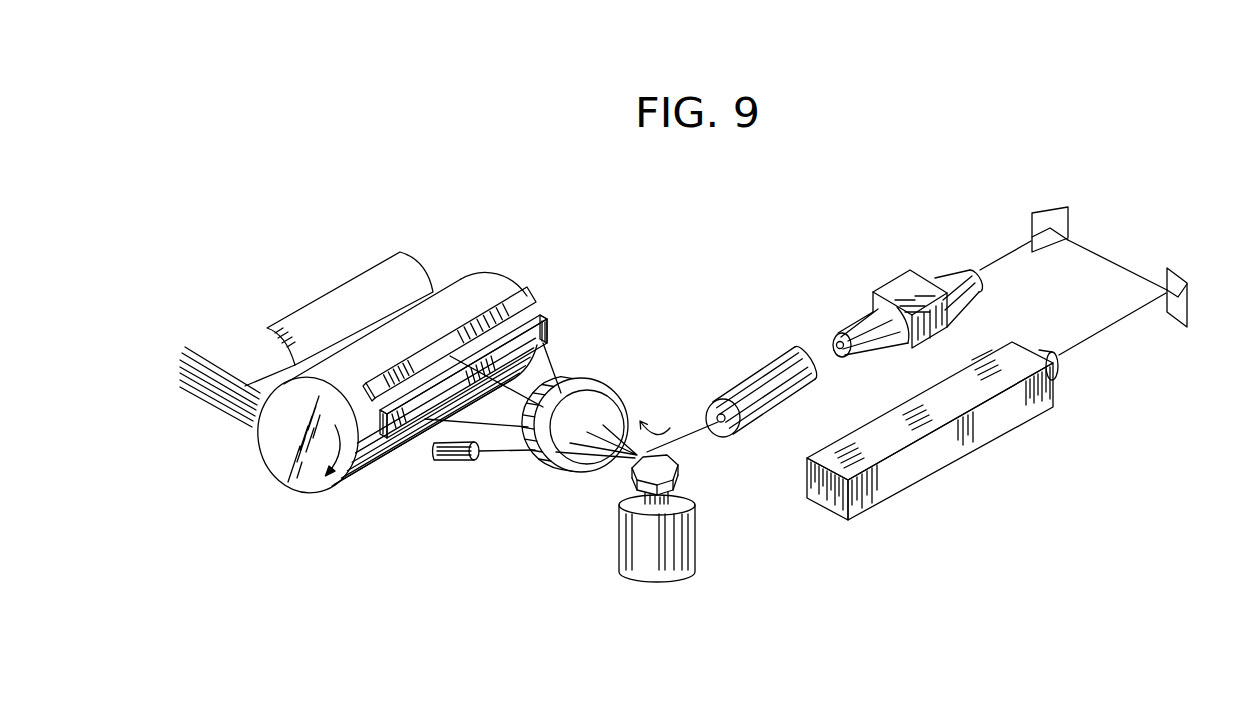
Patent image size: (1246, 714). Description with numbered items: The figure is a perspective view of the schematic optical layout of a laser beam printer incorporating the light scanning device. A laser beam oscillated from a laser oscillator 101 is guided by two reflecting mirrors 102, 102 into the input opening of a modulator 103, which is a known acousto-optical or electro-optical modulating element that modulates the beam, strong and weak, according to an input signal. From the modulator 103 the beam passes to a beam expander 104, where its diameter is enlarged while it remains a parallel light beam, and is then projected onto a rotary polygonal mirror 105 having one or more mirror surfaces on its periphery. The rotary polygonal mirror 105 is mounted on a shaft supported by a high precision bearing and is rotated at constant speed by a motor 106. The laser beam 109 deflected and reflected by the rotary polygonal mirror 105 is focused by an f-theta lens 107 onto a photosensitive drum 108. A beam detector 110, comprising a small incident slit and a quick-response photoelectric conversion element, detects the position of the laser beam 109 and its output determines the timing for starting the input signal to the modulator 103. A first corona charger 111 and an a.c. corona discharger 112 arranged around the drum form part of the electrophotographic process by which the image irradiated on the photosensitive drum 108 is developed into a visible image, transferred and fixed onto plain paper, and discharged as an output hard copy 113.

The laser oscillator 101 is at (952, 464).
The reflecting mirror 102 is at (1035, 213).
The modulator 103 is at (900, 288).
The beam expander 104 is at (772, 365).
The rotary polygonal mirror 105 is at (681, 460).
The motor 106 is at (693, 564).
The f-theta lens 107 is at (601, 396).
The photosensitive drum 108 is at (489, 283).
The laser beam 109 is at (437, 440).
The beam detector 110 is at (466, 465).
The first corona charger 111 is at (527, 298).
The a.c. corona discharger 112 is at (547, 326).
The output hard copy 113 is at (413, 271).